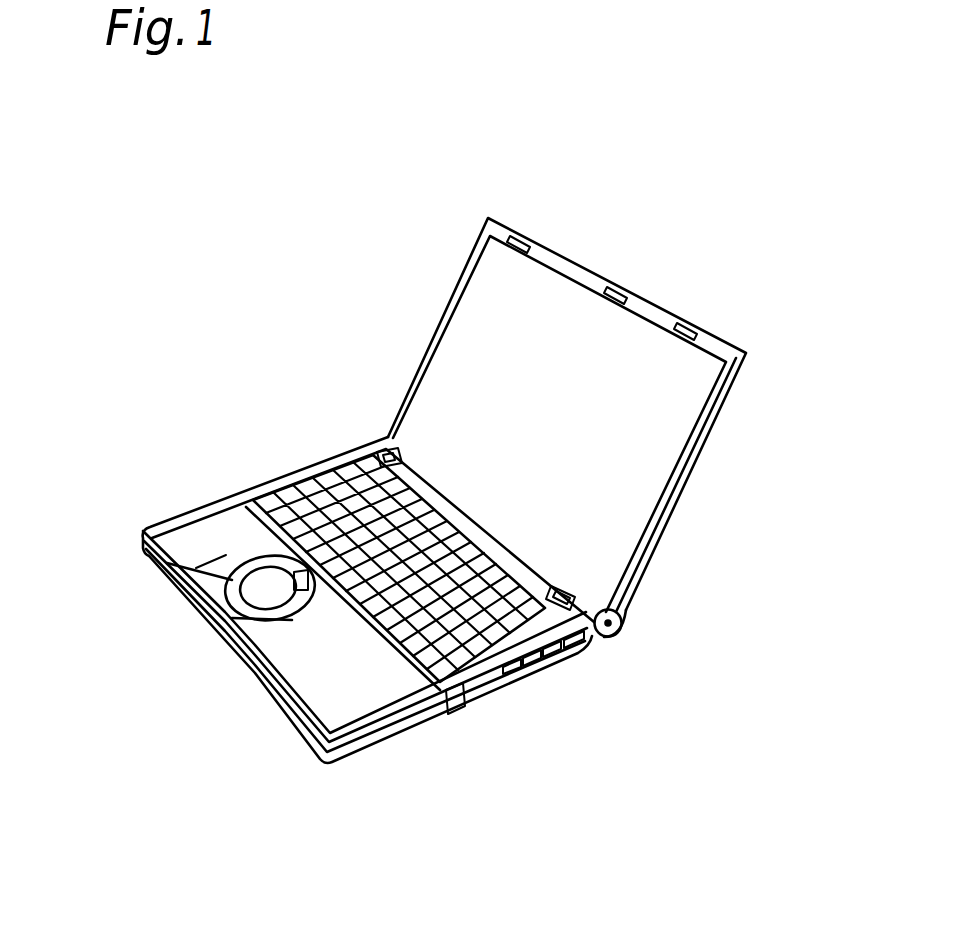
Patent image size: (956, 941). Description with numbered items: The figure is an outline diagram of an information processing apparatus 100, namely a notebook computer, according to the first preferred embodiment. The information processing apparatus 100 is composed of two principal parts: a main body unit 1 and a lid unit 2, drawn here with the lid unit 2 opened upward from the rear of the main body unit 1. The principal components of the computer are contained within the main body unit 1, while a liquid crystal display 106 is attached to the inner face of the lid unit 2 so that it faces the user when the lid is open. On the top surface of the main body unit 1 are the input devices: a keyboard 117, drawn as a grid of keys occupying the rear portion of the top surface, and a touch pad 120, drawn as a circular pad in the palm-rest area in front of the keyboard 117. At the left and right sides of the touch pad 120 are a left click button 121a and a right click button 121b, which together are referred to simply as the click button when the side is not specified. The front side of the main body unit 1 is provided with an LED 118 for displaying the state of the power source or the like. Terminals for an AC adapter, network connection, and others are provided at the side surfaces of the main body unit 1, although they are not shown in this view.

The information processing apparatus 100 is at (629, 248).
The main body unit 1 is at (217, 498).
The lid unit 2 is at (740, 392).
The liquid crystal display 106 is at (475, 297).
The keyboard 117 is at (307, 480).
The LED 118 is at (140, 540).
The touch pad 120 is at (265, 586).
The left click button 121a is at (167, 563).
The right click button 121b is at (283, 623).